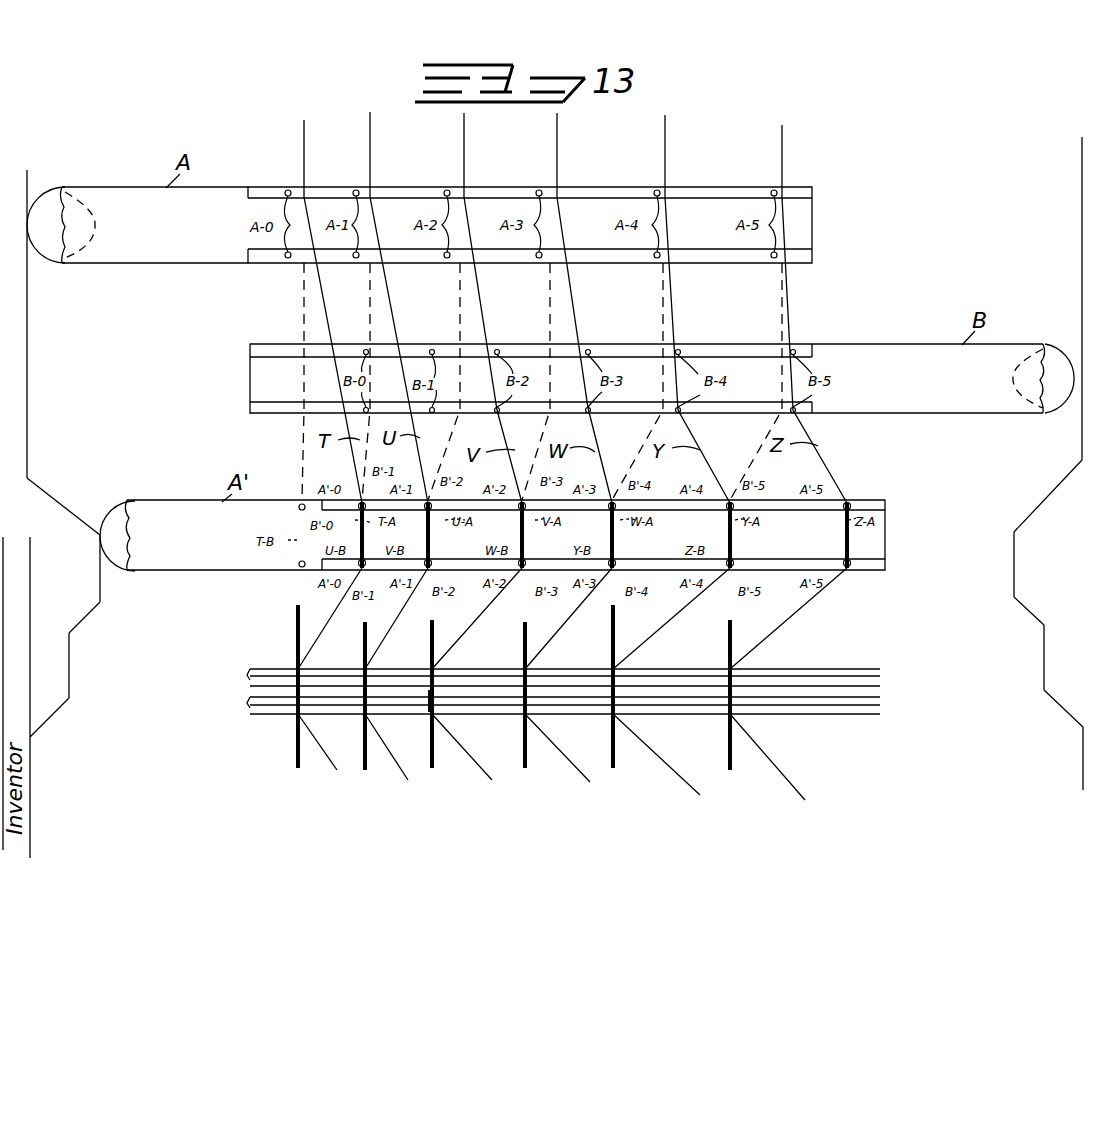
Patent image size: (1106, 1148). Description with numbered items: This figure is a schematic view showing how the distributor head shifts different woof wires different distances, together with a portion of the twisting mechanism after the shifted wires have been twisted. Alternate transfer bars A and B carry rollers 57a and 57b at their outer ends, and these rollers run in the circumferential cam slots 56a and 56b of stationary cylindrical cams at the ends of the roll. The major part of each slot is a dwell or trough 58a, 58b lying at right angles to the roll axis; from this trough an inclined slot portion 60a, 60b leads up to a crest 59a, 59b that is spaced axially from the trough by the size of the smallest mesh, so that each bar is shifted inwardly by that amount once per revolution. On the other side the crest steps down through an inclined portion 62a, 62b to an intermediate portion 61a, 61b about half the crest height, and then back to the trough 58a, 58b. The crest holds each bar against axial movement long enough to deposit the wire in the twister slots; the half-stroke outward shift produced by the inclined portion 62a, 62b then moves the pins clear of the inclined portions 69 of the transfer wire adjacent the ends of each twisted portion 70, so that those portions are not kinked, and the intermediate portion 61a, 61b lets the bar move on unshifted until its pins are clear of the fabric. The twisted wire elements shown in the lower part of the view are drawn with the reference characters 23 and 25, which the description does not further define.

The cam slot 56a is at (38, 176).
The roller 57a is at (50, 192).
The dwell or trough 58a is at (28, 357).
The crest 59a is at (100, 577).
The inclined slot portion 60a is at (60, 490).
The intermediate portion 61a is at (69, 668).
The inclined portion 62a is at (90, 612).
The cam slot 56b is at (1065, 148).
The roller 57b is at (1057, 343).
The dwell or trough 58b is at (1070, 260).
The crest 59b is at (1015, 570).
The inclined slot portion 60b is at (1038, 508).
The intermediate portion 61b is at (1040, 663).
The inclined portion 62b is at (1028, 622).
The rail 23 is at (832, 672).
The needle bars 25 is at (613, 640).
The inclined portions 69 is at (455, 644).
The twisted portion 70 is at (428, 696).